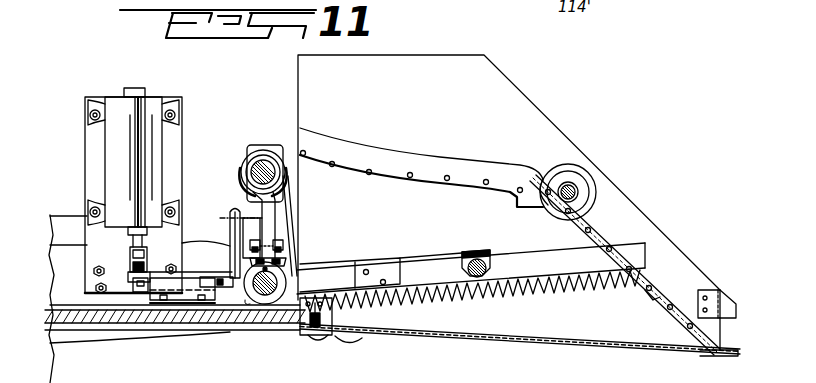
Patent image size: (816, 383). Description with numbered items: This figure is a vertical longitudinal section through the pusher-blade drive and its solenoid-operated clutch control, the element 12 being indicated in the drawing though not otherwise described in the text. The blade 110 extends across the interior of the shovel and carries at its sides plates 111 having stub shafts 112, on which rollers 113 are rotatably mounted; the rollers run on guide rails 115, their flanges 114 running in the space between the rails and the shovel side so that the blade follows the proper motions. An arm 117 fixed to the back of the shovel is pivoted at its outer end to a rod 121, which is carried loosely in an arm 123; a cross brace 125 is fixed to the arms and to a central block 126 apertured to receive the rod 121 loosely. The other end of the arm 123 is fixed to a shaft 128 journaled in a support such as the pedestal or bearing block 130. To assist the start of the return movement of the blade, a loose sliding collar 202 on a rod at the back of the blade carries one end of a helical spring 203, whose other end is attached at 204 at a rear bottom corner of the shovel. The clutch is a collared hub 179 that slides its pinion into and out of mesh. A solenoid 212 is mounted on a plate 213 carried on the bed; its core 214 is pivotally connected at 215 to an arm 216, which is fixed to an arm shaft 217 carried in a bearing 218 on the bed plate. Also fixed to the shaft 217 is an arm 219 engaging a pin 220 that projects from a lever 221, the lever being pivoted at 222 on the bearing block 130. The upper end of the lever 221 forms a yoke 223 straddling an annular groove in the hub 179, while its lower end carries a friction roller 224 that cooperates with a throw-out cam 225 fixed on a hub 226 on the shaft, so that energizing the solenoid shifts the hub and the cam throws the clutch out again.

The bolts / mounting bracket 12 is at (248, 248).
The blade 110 is at (688, 297).
The plates 111 is at (548, 204).
The stub shafts 112 is at (578, 190).
The rollers 113 is at (582, 172).
The flanges 114 is at (600, 204).
The guide rails 115 is at (548, 113).
The arm 117 is at (545, 258).
The rod 121 is at (478, 278).
The arm 123 is at (405, 253).
The cross brace 125 is at (433, 254).
The central block 126 is at (490, 262).
The shaft 128 is at (257, 300).
The bearing block 130 is at (300, 210).
The collared hub 179 is at (266, 162).
The sliding collar 202 is at (633, 300).
The helical spring 203 is at (545, 295).
The spring attachment 204 is at (322, 322).
The solenoid 212 is at (115, 157).
The plate 213 is at (172, 153).
The core 214 is at (118, 242).
The pivotal connection 215 is at (130, 258).
The arm 216 is at (133, 270).
The arm shaft 217 is at (143, 288).
The bearing 218 is at (180, 293).
The arm 219 is at (243, 217).
The pin 220 is at (240, 212).
The lever 221 is at (268, 230).
The pivot 222 is at (288, 250).
The yoke 223 is at (297, 192).
The friction roller 224 is at (285, 268).
The cam 225 is at (296, 279).
The hub 226 is at (270, 298).